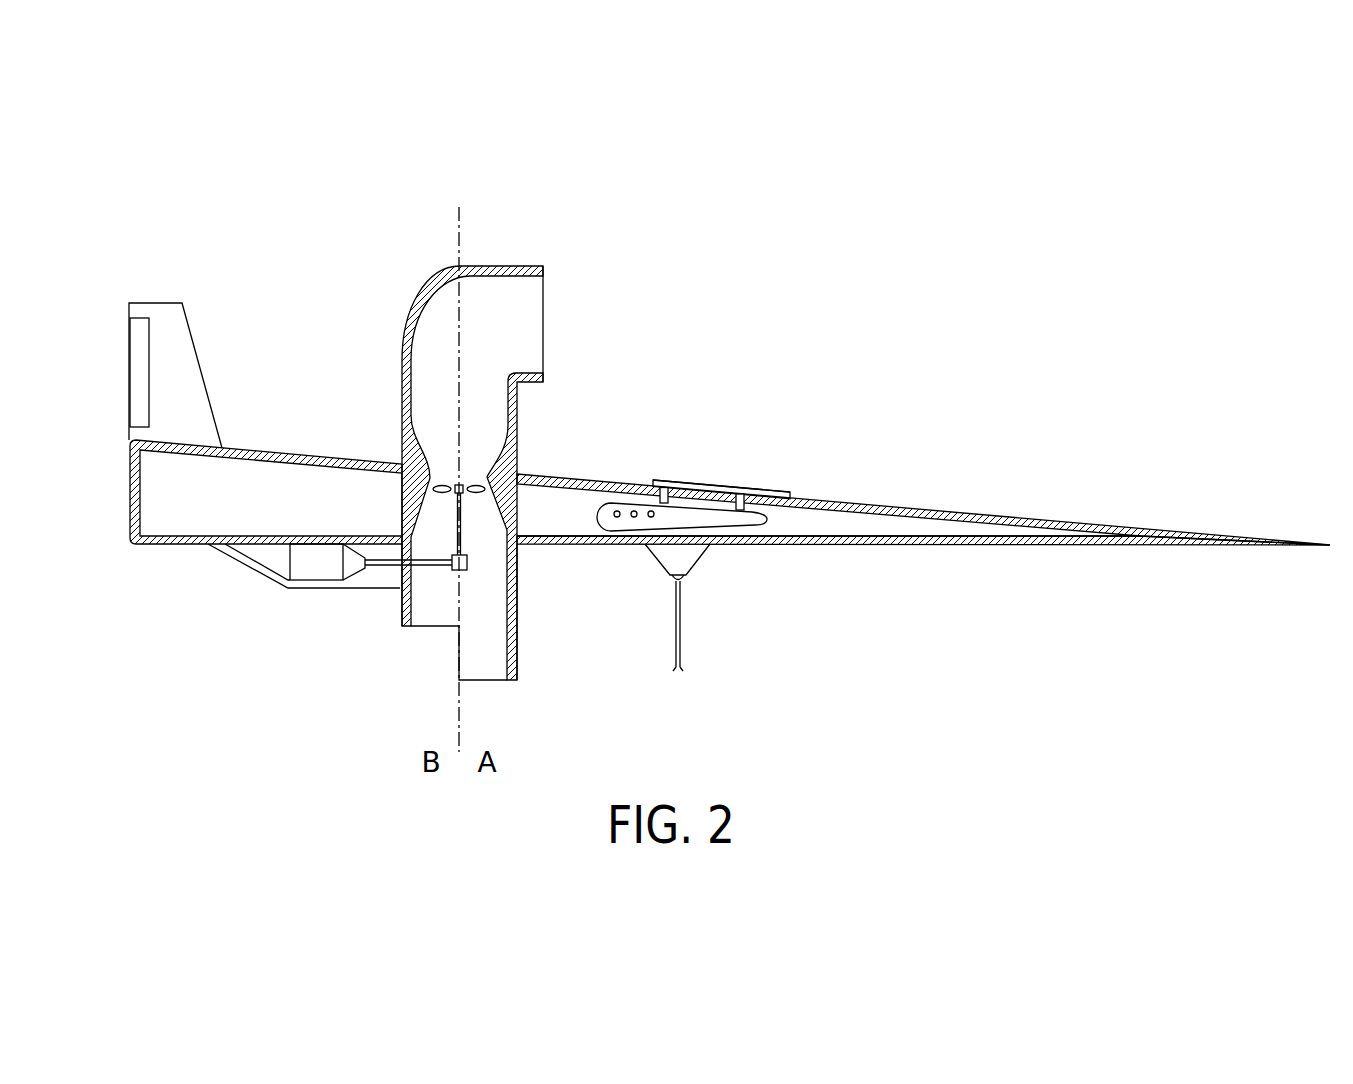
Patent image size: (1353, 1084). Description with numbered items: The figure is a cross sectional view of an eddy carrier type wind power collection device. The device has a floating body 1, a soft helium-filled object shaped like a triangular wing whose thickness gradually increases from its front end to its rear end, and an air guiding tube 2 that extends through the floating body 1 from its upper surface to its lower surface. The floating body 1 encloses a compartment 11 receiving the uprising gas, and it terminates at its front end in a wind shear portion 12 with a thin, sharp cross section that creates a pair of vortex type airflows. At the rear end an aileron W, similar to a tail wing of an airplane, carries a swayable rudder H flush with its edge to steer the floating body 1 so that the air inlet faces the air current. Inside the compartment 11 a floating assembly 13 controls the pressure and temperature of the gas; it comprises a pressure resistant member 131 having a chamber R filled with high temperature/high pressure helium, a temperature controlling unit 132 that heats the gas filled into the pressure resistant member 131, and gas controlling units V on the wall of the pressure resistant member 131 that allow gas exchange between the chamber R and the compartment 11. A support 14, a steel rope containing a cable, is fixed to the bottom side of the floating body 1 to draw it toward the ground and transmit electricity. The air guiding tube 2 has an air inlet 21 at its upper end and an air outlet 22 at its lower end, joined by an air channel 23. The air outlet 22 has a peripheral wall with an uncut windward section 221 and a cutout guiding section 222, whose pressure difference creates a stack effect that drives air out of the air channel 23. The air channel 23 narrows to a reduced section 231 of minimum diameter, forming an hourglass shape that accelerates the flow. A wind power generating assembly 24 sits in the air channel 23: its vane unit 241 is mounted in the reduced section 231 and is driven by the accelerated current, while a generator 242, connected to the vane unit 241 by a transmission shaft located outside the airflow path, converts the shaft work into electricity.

The floating body 1 is at (962, 545).
The compartment 11 is at (823, 521).
The wind shear portion 12 is at (1087, 514).
The floating assembly 13 is at (663, 363).
The pressure resistant member 131 is at (645, 507).
The temperature controlling unit 132 is at (755, 489).
The support 14 is at (680, 633).
The air guiding tube 2 is at (510, 254).
The air inlet 21 is at (543, 283).
The air outlet 22 is at (458, 668).
The windward section 221 is at (522, 672).
The guiding section 222 is at (399, 646).
The air channel 23 is at (433, 329).
The reduced section 231 is at (492, 490).
The wind power generating assembly 24 is at (352, 335).
The vane unit 241 is at (443, 486).
The generator 242 is at (308, 555).
The aileron W is at (162, 310).
The rudder H is at (135, 350).
The chamber R is at (723, 521).
The gas controlling unit V is at (617, 516).